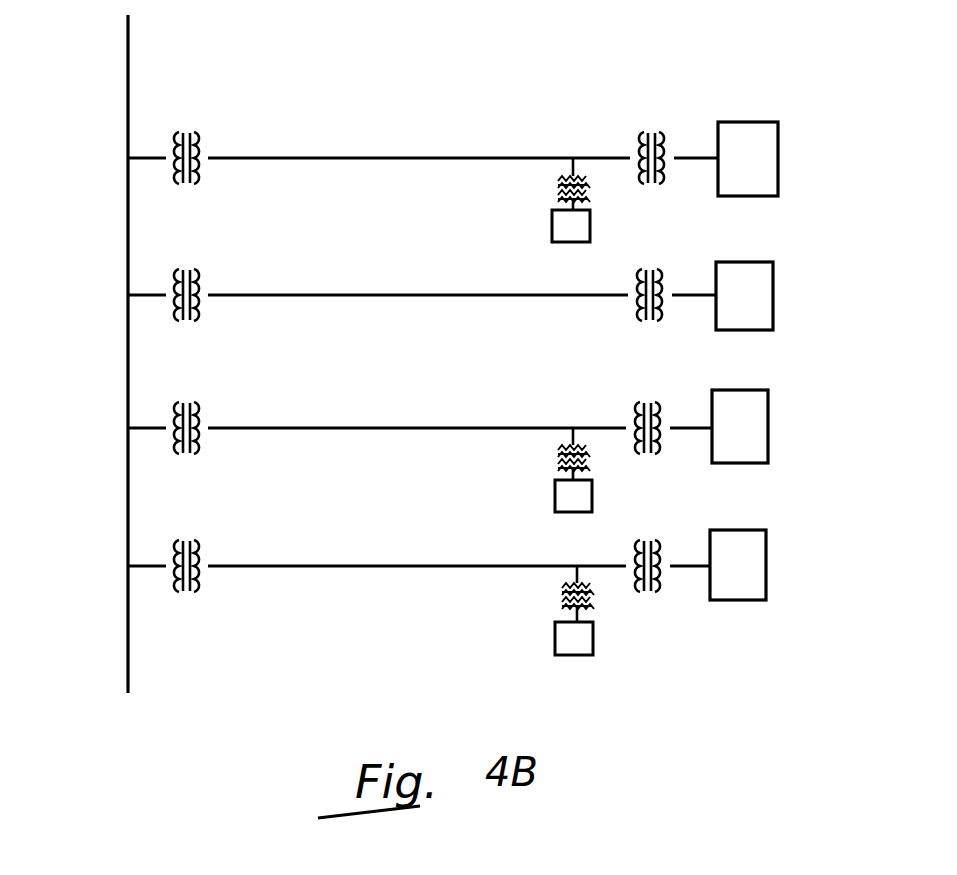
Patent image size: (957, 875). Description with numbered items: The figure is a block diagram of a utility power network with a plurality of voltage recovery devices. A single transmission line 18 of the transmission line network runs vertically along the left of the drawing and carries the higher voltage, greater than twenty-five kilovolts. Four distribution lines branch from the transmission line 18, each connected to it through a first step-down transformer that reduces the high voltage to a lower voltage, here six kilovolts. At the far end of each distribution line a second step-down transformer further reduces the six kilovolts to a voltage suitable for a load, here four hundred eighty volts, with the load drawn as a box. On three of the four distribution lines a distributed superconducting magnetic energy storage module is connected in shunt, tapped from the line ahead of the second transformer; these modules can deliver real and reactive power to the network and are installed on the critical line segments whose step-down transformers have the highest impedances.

The transmission line 18 is at (125, 61).